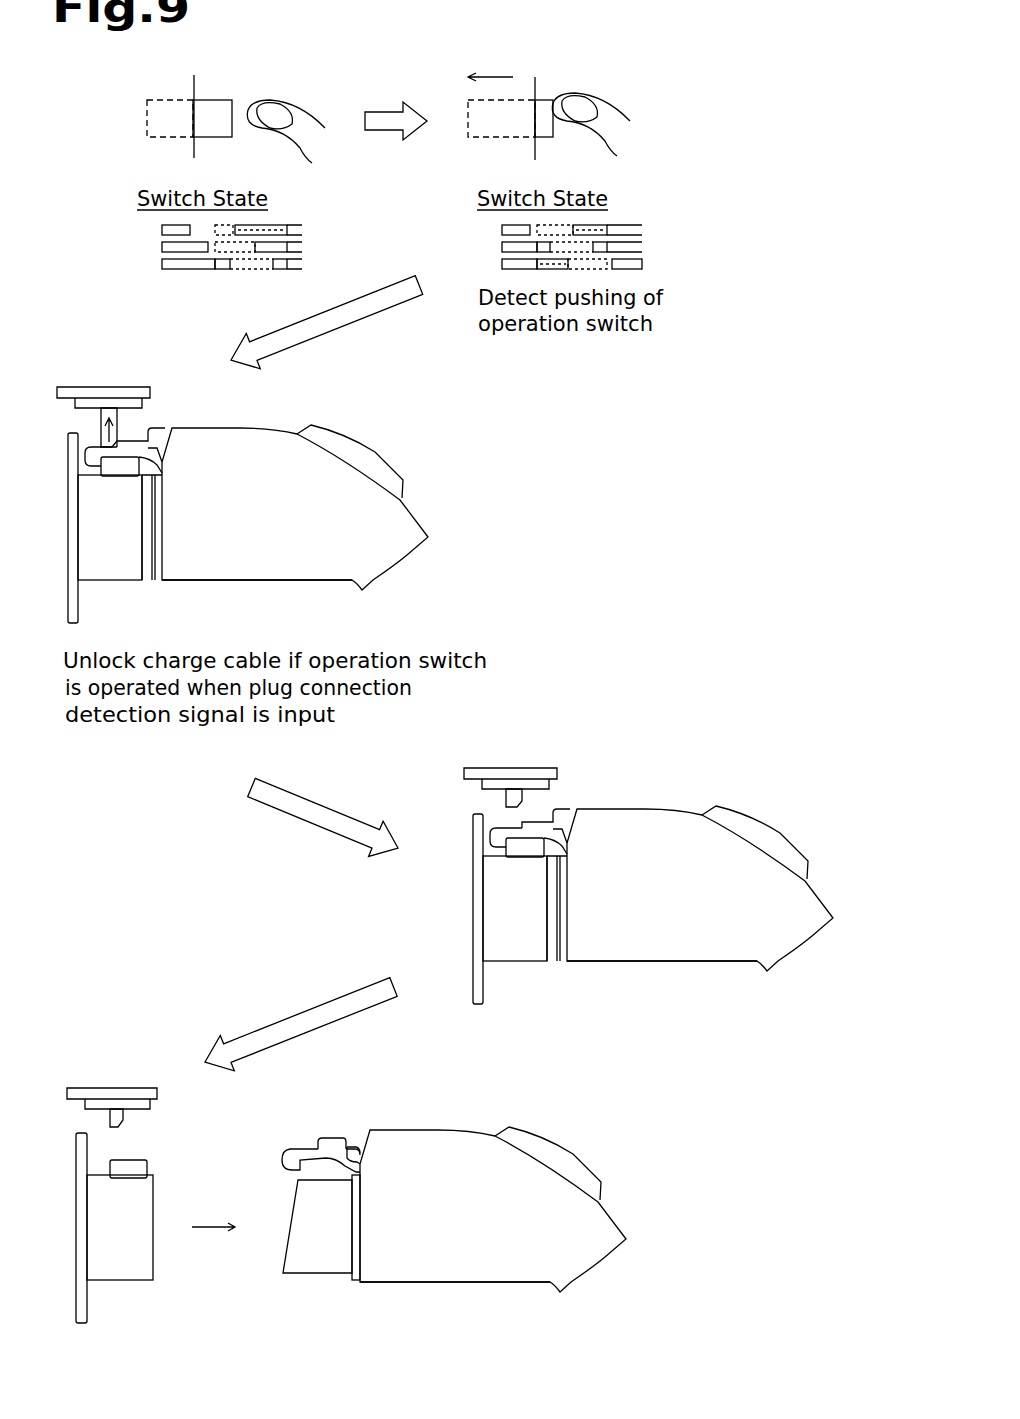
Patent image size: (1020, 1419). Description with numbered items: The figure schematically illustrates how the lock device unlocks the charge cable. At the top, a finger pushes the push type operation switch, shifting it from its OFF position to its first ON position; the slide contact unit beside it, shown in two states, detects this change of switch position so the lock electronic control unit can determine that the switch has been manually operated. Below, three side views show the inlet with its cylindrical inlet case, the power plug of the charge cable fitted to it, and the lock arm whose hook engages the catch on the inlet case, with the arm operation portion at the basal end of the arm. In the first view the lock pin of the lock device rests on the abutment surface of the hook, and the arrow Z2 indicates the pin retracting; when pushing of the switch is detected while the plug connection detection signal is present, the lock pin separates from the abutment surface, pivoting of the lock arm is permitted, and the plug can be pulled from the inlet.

The unlock direction Z2 is at (118, 440).